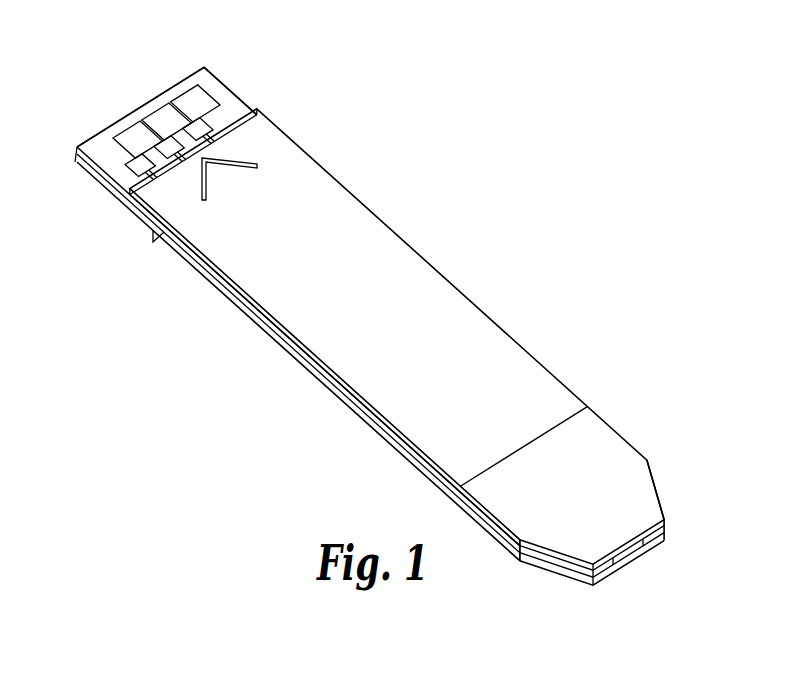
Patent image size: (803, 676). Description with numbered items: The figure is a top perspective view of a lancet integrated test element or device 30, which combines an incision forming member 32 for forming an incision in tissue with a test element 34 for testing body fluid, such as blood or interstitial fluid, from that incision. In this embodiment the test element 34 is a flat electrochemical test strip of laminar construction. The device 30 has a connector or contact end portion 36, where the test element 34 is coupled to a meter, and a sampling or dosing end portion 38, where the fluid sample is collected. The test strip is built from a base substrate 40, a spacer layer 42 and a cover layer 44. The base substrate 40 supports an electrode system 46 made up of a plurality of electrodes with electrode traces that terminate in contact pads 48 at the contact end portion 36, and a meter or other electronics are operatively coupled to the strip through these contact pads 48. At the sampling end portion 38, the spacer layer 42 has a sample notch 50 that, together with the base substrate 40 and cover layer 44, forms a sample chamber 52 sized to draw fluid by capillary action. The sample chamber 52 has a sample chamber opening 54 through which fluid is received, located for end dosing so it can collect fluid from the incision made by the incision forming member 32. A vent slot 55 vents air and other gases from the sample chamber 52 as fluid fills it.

The lancet integrated test element 30 is at (455, 218).
The incision forming member 32 is at (120, 204).
The test element 34 is at (478, 332).
The contact end portion 36 is at (143, 88).
The sampling end portion 38 is at (669, 452).
The base substrate 40 is at (277, 348).
The spacer layer 42 is at (275, 311).
The cover layer 44 is at (613, 426).
The electrode system 46 is at (205, 62).
The contact pads 48 is at (135, 137).
The sample notch 50 is at (660, 497).
The sample chamber 52 is at (625, 567).
The sample chamber opening 54 is at (648, 556).
The vent slot 55 is at (517, 548).